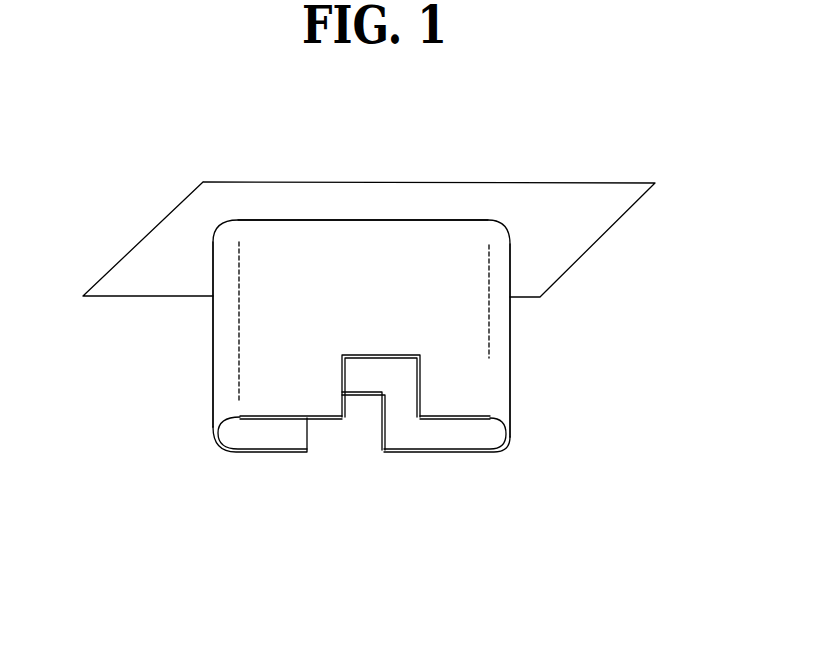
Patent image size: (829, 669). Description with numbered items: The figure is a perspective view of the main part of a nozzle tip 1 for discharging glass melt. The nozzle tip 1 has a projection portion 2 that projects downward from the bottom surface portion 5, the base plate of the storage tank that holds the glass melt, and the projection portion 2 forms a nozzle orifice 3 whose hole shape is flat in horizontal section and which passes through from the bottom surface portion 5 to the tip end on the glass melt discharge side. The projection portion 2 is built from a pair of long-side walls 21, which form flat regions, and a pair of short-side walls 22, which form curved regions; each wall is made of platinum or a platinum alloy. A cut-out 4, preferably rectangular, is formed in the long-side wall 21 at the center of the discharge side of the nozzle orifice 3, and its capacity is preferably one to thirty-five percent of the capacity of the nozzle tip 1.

The nozzle tip 1 is at (376, 337).
The projection portion 2 is at (292, 279).
The nozzle orifice 3 is at (410, 428).
The cut-out 4 is at (382, 386).
The bottom surface portion 5 is at (546, 234).
The long-side wall 21 is at (380, 252).
The short-side wall 22 is at (227, 358).